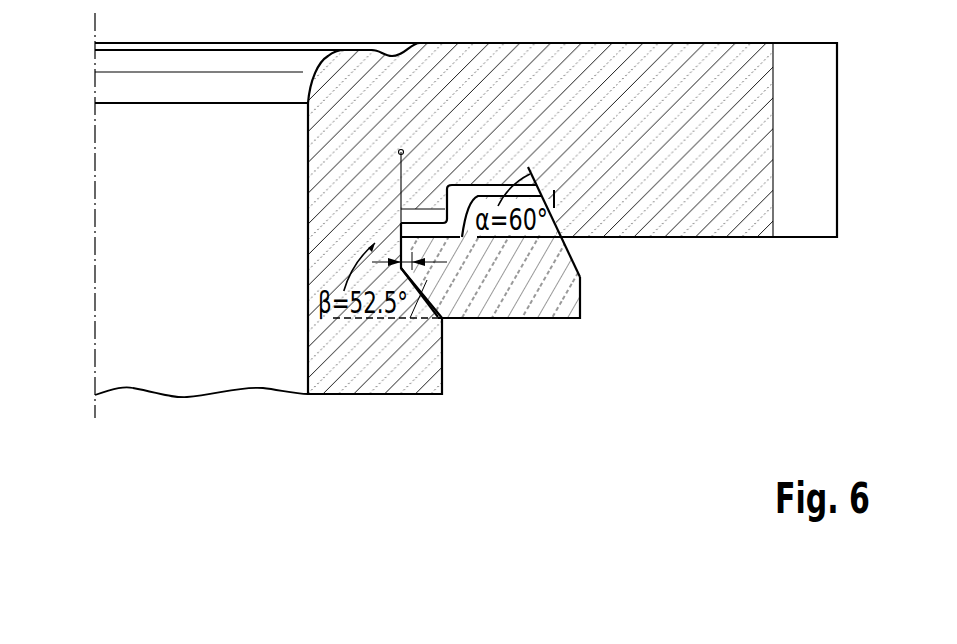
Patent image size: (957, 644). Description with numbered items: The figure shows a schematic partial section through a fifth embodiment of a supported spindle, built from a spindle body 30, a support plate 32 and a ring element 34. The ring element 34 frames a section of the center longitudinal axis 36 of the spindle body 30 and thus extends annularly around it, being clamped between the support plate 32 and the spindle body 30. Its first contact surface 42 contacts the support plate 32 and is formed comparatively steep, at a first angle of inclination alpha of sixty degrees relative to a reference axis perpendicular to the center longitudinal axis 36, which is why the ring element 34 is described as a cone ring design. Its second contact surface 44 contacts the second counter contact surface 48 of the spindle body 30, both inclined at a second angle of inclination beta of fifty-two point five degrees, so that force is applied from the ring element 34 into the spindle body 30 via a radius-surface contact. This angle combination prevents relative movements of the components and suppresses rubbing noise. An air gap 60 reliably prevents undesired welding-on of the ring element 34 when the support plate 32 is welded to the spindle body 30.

The spindle body 30 is at (384, 353).
The support plate 32 is at (745, 141).
The ring element 34 is at (527, 283).
The center longitudinal axis 36 is at (95, 207).
The first contact surface 42 is at (558, 208).
The second contact surface 44 is at (412, 313).
The second counter contact surface 48 is at (425, 297).
The air gap 60 is at (414, 257).